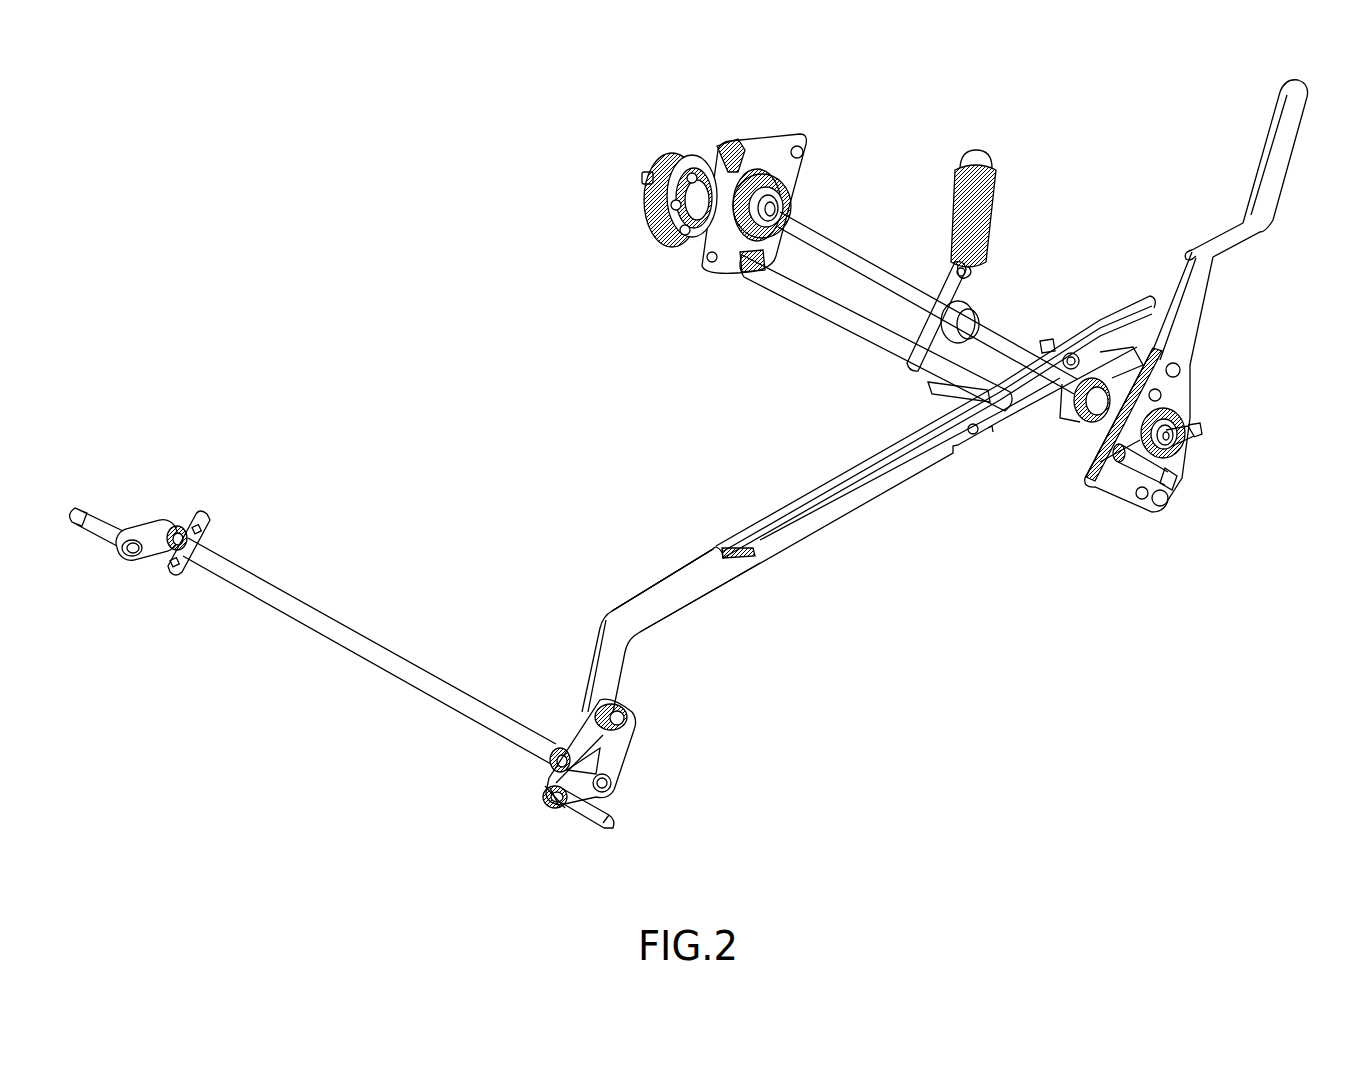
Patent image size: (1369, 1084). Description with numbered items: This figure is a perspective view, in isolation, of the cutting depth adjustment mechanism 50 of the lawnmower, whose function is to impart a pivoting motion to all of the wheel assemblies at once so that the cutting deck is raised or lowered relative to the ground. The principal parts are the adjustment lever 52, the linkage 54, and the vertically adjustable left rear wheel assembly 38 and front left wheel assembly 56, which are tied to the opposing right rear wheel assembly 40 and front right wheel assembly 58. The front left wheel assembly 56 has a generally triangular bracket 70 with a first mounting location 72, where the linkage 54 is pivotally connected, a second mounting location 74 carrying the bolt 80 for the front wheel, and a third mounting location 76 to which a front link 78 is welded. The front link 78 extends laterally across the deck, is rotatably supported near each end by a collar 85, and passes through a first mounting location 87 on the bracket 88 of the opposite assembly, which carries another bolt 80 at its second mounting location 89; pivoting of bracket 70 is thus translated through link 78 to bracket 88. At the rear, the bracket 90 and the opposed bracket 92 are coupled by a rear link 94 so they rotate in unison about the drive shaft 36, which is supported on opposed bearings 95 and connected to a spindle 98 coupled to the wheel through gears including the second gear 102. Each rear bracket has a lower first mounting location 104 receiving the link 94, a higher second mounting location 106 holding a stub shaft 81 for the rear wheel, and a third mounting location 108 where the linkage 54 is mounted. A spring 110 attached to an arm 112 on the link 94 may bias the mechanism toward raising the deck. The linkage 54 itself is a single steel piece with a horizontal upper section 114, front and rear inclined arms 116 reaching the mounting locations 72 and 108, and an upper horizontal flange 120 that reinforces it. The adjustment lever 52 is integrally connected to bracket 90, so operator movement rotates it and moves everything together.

The drive shaft 36 is at (863, 268).
The left rear wheel assembly 38 is at (1118, 496).
The right rear wheel assembly 40 is at (758, 138).
The cutting depth adjustment mechanism 50 is at (855, 685).
The adjustment lever 52 is at (1285, 187).
The linkage 54 is at (842, 525).
The front left wheel assembly 56 is at (556, 822).
The front right wheel assembly 58 is at (158, 512).
The bracket 70 is at (634, 740).
The first mounting location 72 is at (630, 716).
The second mounting location 74 is at (545, 794).
The third mounting location 76 is at (616, 786).
The front link 78 is at (370, 660).
The bolt 80 is at (100, 530).
The stub shaft 81 is at (641, 178).
The collar 85 is at (185, 565).
The first mounting location 87 is at (168, 525).
The bracket 88 is at (158, 555).
The second mounting location 89 is at (115, 560).
The bracket 90 is at (1201, 402).
The bracket 92 is at (722, 160).
The rear link 94 is at (822, 304).
The bearings 95 is at (796, 206).
The spindle 98 is at (1196, 450).
The second gear 102 is at (653, 215).
The first mounting location 104 is at (1170, 505).
The second mounting location 106 is at (690, 246).
The third mounting location 108 is at (1183, 370).
The spring 110 is at (993, 210).
The arm 112 is at (975, 290).
The upper section 114 is at (686, 590).
The inclined arms 116 is at (607, 660).
The upper horizontal flange 120 is at (850, 482).